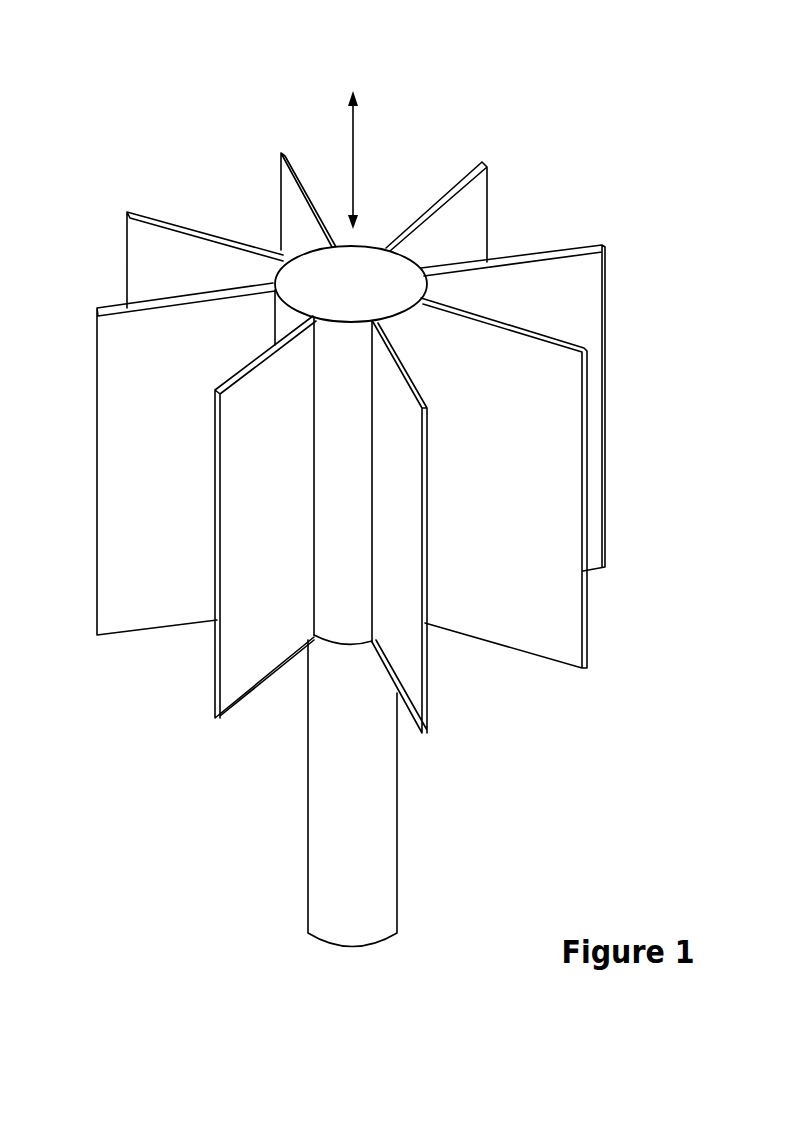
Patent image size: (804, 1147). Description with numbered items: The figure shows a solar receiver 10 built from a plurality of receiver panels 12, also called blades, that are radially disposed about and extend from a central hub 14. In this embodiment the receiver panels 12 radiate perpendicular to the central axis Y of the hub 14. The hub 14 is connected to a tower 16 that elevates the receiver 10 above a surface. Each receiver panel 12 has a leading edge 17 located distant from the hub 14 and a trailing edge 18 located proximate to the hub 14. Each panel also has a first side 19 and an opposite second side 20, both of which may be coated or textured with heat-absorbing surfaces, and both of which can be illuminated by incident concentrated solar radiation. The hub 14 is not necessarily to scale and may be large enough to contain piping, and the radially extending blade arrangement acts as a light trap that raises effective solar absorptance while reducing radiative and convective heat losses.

The receiver 10 is at (176, 52).
The receiver panels 12 is at (582, 248).
The central hub 14 is at (355, 277).
The tower 16 is at (385, 860).
The leading edge 17 is at (425, 487).
The trailing edge 18 is at (367, 490).
The first side 19 is at (397, 643).
The second side 20 is at (123, 560).